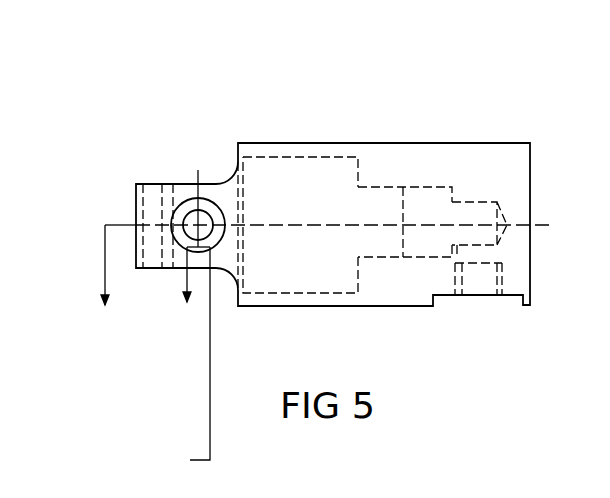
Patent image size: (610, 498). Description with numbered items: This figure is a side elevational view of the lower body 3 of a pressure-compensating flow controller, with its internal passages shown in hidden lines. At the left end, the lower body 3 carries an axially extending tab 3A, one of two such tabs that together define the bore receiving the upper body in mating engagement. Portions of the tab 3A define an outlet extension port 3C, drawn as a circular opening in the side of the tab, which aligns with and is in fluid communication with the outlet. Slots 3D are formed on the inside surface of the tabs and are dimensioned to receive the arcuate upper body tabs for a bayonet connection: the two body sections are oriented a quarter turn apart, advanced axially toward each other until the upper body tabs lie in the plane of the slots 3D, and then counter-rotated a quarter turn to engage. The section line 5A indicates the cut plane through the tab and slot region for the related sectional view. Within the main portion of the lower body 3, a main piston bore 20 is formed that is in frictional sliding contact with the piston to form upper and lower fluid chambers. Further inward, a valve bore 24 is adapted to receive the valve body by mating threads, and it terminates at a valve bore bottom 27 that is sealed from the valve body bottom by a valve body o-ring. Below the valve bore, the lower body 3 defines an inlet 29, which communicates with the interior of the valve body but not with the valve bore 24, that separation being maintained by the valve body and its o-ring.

The lower body 3 is at (398, 327).
The axially extending tab 3A is at (223, 192).
The outlet extension port 3C is at (193, 212).
The slot 3D is at (167, 268).
The section line 5A is at (144, 354).
The main piston bore 20 is at (278, 178).
The valve bore 24 is at (418, 203).
The valve bore bottom 27 is at (452, 192).
The inlet 29 is at (486, 283).